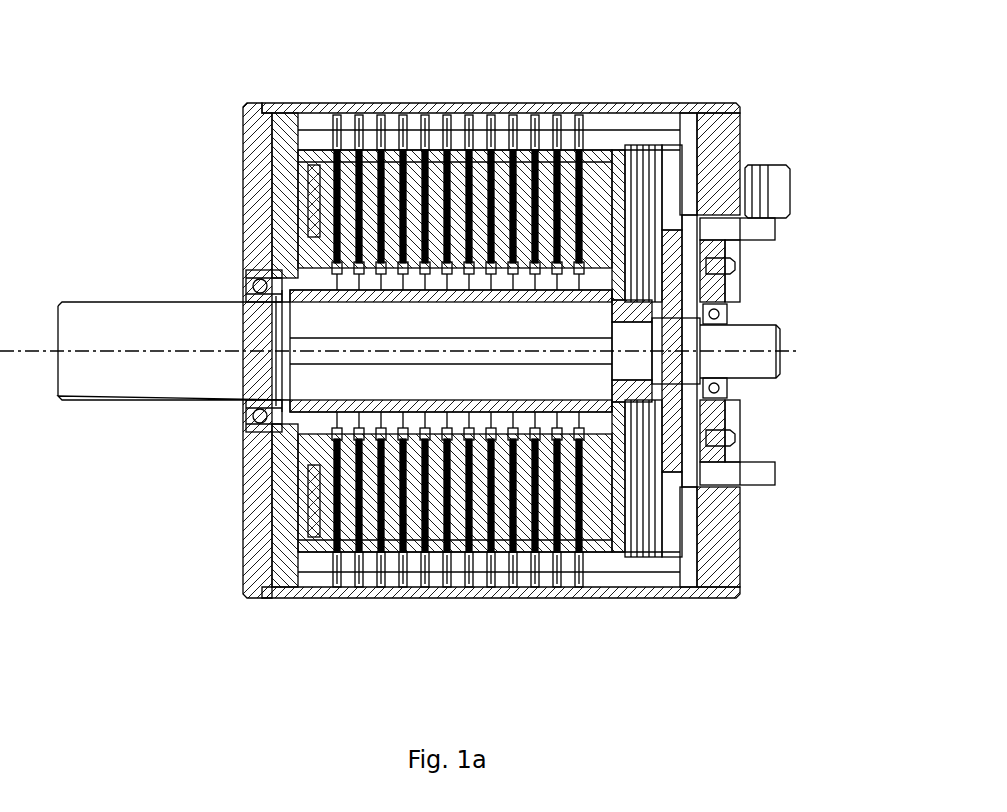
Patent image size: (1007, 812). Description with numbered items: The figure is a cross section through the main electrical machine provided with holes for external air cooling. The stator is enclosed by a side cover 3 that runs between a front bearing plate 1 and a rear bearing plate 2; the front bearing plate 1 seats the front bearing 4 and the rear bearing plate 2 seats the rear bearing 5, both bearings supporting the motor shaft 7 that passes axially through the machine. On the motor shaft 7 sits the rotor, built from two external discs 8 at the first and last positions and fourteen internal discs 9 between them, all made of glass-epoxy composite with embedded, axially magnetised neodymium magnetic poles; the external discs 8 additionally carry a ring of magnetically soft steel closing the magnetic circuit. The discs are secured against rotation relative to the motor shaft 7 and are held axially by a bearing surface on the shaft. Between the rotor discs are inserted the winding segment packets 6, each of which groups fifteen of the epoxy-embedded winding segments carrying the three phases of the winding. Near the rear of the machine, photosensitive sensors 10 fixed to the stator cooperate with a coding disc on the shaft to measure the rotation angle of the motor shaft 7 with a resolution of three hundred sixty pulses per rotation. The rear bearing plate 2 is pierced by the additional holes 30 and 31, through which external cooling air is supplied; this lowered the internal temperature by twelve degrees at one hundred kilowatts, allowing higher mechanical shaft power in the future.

The front bearing plate 1 is at (262, 177).
The rear bearing plate 2 is at (718, 148).
The side cover 3 is at (450, 100).
The front bearing 4 is at (247, 268).
The rear bearing 5 is at (752, 312).
The winding segment packets 6 is at (577, 130).
The motor shaft 7 is at (222, 325).
The external discs 8 is at (308, 192).
The internal discs 9 is at (345, 140).
The photosensitive sensors 10 is at (702, 312).
The additional hole 30 is at (730, 222).
The additional hole 31 is at (745, 475).